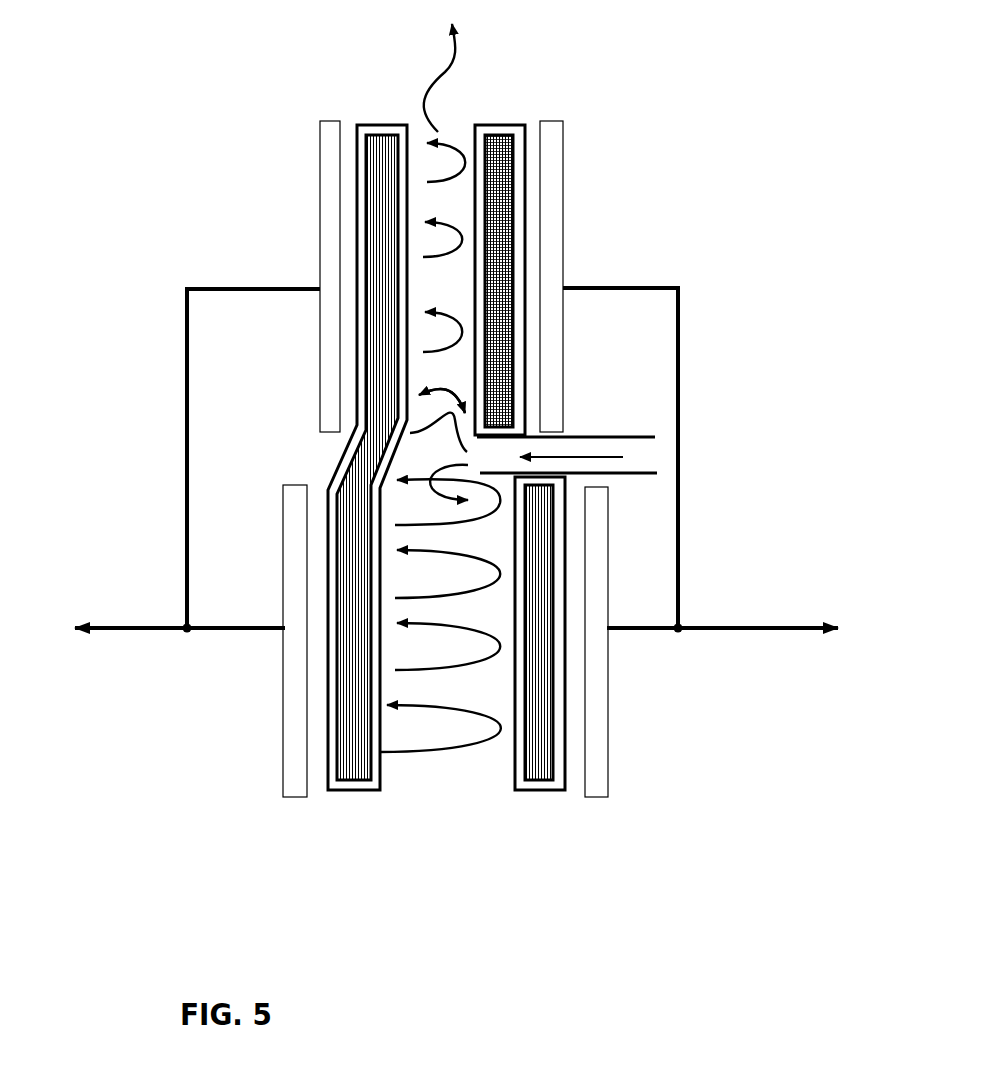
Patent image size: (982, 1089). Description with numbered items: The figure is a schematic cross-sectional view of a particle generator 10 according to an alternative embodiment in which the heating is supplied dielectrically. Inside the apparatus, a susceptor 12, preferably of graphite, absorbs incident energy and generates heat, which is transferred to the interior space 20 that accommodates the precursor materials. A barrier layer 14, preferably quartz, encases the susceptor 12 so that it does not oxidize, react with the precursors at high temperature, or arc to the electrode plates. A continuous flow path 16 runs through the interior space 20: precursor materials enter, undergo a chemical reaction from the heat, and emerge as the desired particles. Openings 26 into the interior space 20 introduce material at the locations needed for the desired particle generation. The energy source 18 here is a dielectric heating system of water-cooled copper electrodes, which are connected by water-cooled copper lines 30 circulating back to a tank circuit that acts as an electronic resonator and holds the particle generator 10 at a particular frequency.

The particle generator 10 is at (550, 86).
The susceptor 12 is at (352, 748).
The barrier layer 14 is at (520, 753).
The continuous flow path 16 is at (456, 78).
The energy source 18 is at (328, 227).
The interior space 20 is at (427, 135).
The openings 26 is at (645, 457).
The water-cooled copper lines 30 is at (187, 477).